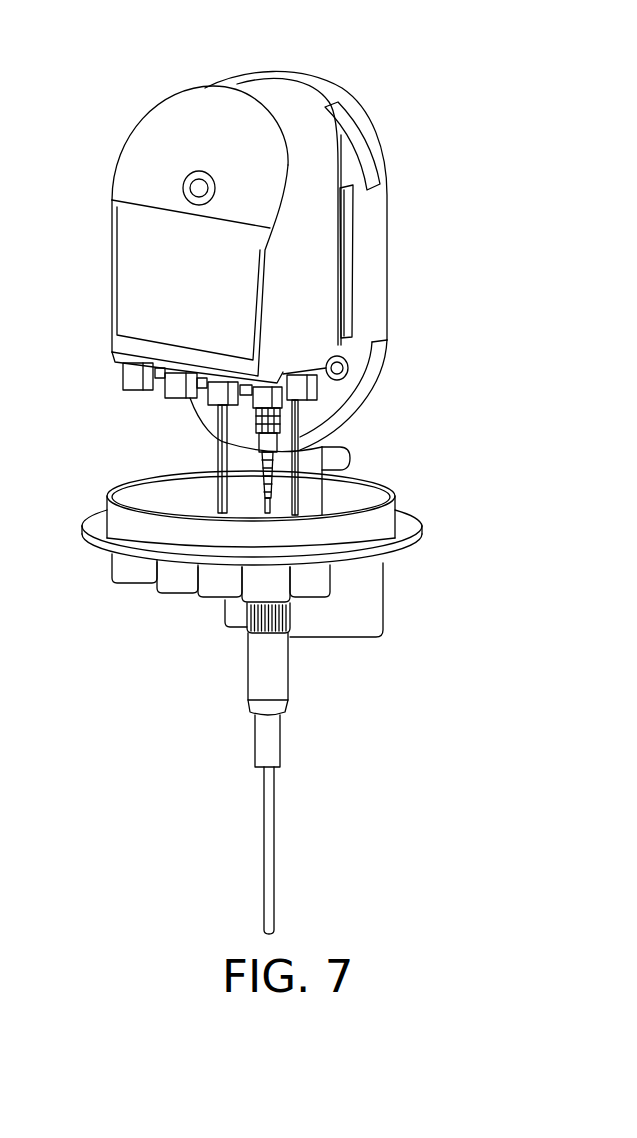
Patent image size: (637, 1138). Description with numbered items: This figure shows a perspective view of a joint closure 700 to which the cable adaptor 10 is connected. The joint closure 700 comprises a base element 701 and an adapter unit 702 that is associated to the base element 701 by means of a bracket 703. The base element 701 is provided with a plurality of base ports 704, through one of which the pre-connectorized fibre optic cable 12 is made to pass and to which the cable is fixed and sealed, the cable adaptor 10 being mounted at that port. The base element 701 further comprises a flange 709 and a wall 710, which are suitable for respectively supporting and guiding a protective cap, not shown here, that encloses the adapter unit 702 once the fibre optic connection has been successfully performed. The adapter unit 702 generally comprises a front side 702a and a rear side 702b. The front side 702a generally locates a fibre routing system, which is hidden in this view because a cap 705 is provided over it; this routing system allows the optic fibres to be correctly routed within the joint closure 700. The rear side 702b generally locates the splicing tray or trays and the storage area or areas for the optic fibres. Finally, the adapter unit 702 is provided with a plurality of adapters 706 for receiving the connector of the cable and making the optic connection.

The joint closure 700 is at (88, 62).
The cap 705 is at (185, 100).
The front side 702a is at (160, 128).
The rear side 702b is at (352, 82).
The adapter unit 702 is at (410, 275).
The adapters 706 is at (125, 378).
The bracket 703 is at (218, 455).
The wall 710 is at (393, 508).
The base element 701 is at (472, 521).
The flange 709 is at (413, 538).
The base ports 704 is at (165, 583).
The cable adaptor 10 is at (304, 674).
The fibre optic cable 12 is at (273, 840).